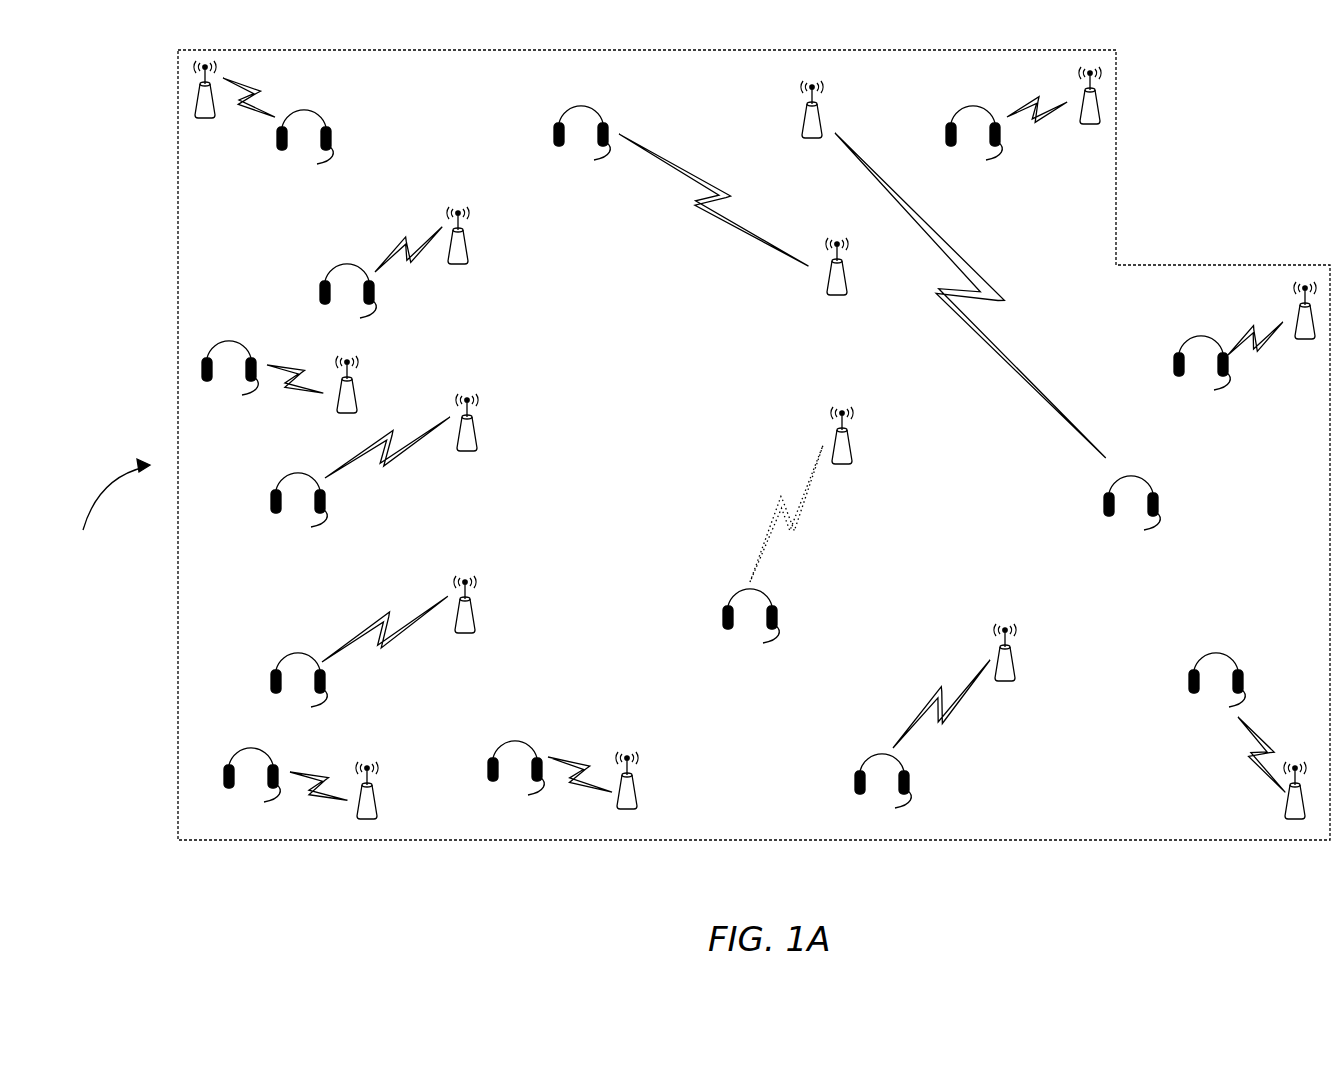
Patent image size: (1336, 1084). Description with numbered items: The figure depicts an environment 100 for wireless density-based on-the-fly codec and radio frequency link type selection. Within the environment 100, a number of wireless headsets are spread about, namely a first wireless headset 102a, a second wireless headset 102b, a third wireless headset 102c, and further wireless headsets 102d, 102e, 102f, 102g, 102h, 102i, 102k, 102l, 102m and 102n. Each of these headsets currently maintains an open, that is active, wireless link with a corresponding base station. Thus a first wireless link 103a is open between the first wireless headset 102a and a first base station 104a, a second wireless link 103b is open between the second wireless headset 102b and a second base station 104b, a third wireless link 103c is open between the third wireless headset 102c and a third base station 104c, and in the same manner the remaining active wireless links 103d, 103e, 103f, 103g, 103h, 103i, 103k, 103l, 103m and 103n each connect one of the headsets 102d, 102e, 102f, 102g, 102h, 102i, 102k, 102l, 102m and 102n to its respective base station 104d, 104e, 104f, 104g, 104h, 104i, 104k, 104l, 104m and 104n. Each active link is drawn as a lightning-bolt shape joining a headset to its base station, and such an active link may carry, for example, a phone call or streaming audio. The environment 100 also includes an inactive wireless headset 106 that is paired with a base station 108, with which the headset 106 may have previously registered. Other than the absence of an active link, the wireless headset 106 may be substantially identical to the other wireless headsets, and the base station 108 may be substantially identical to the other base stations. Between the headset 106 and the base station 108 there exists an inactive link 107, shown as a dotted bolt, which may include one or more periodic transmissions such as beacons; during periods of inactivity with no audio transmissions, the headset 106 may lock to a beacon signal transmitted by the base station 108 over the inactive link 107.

The environment 100 is at (109, 510).
The first wireless headset 102a is at (324, 124).
The second wireless headset 102b is at (323, 284).
The third wireless headset 102c is at (208, 380).
The wireless headset 102d is at (274, 492).
The wireless headset 102e is at (274, 676).
The wireless headset 102f is at (230, 781).
The wireless headset 102g is at (485, 768).
The wireless headset 102h is at (1108, 504).
The wireless headset 102i is at (556, 132).
The wireless headset 102k is at (858, 778).
The wireless headset 102l is at (952, 134).
The wireless headset 102m is at (1176, 367).
The wireless headset 102n is at (1193, 678).
The first wireless link 103a is at (255, 90).
The second wireless link 103b is at (410, 258).
The third wireless link 103c is at (297, 378).
The wireless link 103d is at (390, 460).
The wireless link 103e is at (388, 638).
The wireless link 103f is at (312, 795).
The wireless link 103g is at (575, 772).
The wireless link 103h is at (974, 262).
The wireless link 103i is at (698, 207).
The wireless link 103k is at (948, 720).
The wireless link 103l is at (1037, 97).
The wireless link 103m is at (1252, 333).
The wireless link 103n is at (1247, 757).
The first base station 104a is at (216, 118).
The second base station 104b is at (467, 250).
The third base station 104c is at (355, 392).
The base station 104d is at (476, 436).
The base station 104e is at (476, 618).
The base station 104f is at (377, 800).
The base station 104g is at (636, 790).
The base station 104h is at (805, 116).
The base station 104i is at (846, 282).
The base station 104k is at (1014, 665).
The base station 104l is at (1089, 125).
The base station 104m is at (1298, 340).
The base station 104n is at (1284, 818).
The inactive wireless headset 106 is at (724, 618).
The inactive link 107 is at (777, 502).
The base station 108 is at (851, 450).